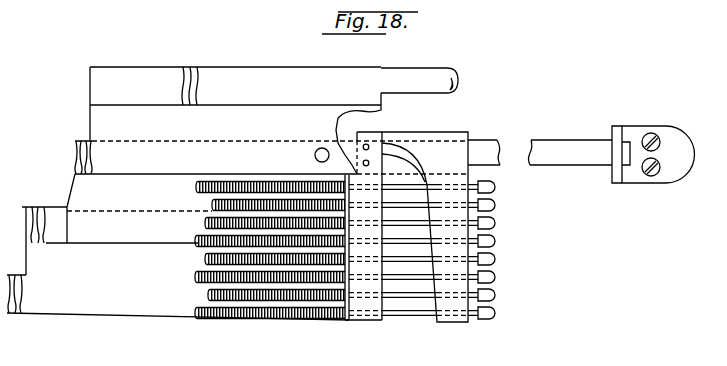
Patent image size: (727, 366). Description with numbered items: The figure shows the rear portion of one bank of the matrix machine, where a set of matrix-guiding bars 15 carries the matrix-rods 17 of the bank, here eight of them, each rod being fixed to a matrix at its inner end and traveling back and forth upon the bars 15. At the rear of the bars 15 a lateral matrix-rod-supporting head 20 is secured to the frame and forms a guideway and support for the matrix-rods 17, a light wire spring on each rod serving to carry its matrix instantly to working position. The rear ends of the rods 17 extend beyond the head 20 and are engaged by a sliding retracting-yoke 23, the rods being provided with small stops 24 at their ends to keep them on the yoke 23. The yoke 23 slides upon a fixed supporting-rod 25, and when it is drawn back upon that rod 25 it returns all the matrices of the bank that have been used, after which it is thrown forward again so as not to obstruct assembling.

The matrix-guiding bars 15 is at (237, 193).
The carrying-rod 17 is at (407, 316).
The matrix-rod-supporting head 20 is at (358, 319).
The yoke 23 is at (412, 227).
The stops 24 is at (520, 270).
The supporting-rod 25 is at (556, 291).